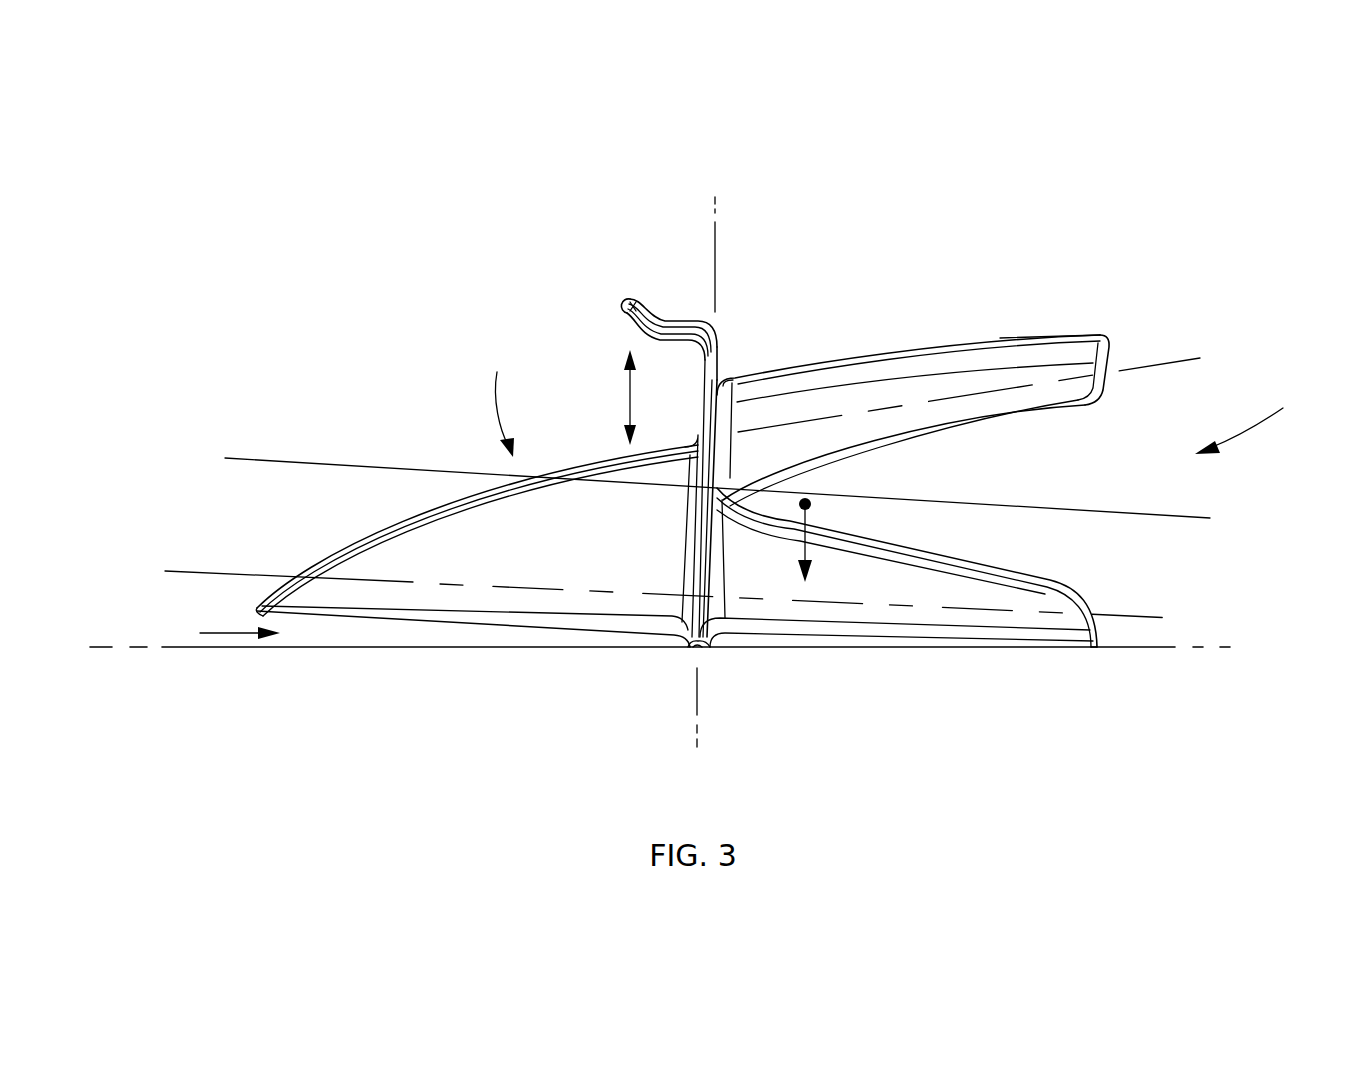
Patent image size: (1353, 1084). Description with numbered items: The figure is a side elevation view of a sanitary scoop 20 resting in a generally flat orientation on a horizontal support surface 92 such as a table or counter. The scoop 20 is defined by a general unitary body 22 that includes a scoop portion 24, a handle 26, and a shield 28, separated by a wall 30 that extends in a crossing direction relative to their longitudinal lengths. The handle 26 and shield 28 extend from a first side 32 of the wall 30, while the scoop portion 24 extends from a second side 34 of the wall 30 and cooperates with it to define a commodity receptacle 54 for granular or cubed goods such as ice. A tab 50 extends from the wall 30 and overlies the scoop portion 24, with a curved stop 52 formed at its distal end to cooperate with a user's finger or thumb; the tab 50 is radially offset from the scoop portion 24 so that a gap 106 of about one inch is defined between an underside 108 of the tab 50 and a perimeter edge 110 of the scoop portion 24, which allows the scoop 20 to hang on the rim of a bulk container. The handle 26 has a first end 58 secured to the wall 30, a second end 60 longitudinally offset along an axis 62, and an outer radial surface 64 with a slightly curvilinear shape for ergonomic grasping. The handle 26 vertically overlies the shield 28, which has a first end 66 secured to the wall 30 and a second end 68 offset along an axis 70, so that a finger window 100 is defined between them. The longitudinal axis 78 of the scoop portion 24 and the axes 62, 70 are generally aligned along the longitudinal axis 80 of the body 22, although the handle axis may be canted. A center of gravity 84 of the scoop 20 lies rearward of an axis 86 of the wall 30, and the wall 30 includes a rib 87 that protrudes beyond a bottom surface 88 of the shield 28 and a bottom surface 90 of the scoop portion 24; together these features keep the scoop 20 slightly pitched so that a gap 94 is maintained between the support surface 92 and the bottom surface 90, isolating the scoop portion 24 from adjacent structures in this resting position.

The scoop 20 is at (812, 196).
The body 22 is at (750, 382).
The scoop portion 24 is at (548, 557).
The handle 26 is at (952, 350).
The shield 28 is at (906, 630).
The wall 30 is at (716, 362).
The first side 32 is at (773, 370).
The second side 34 is at (703, 394).
The tab 50 is at (672, 321).
The stop 52 is at (626, 304).
The commodity receptacle 54 is at (499, 399).
The first end 58 is at (721, 457).
The second end 60 is at (1110, 340).
The axis 62 is at (1163, 364).
The outer radial surface 64 is at (1037, 340).
The first end 66 is at (721, 605).
The second end 68 is at (1095, 593).
The axis 70 is at (1150, 617).
The longitudinal axis 78 is at (250, 570).
The longitudinal axis 80 is at (1177, 512).
The center of gravity 84 is at (828, 508).
The axis 86 is at (697, 713).
The rib 87 is at (700, 647).
The bottom surface 88 is at (822, 640).
The bottom surface 90 is at (485, 623).
The support surface 92 is at (357, 648).
The gap 94 is at (227, 635).
The finger window 100 is at (1255, 418).
The gap 106 is at (595, 397).
The underside 108 is at (685, 340).
The perimeter edge 110 is at (690, 446).